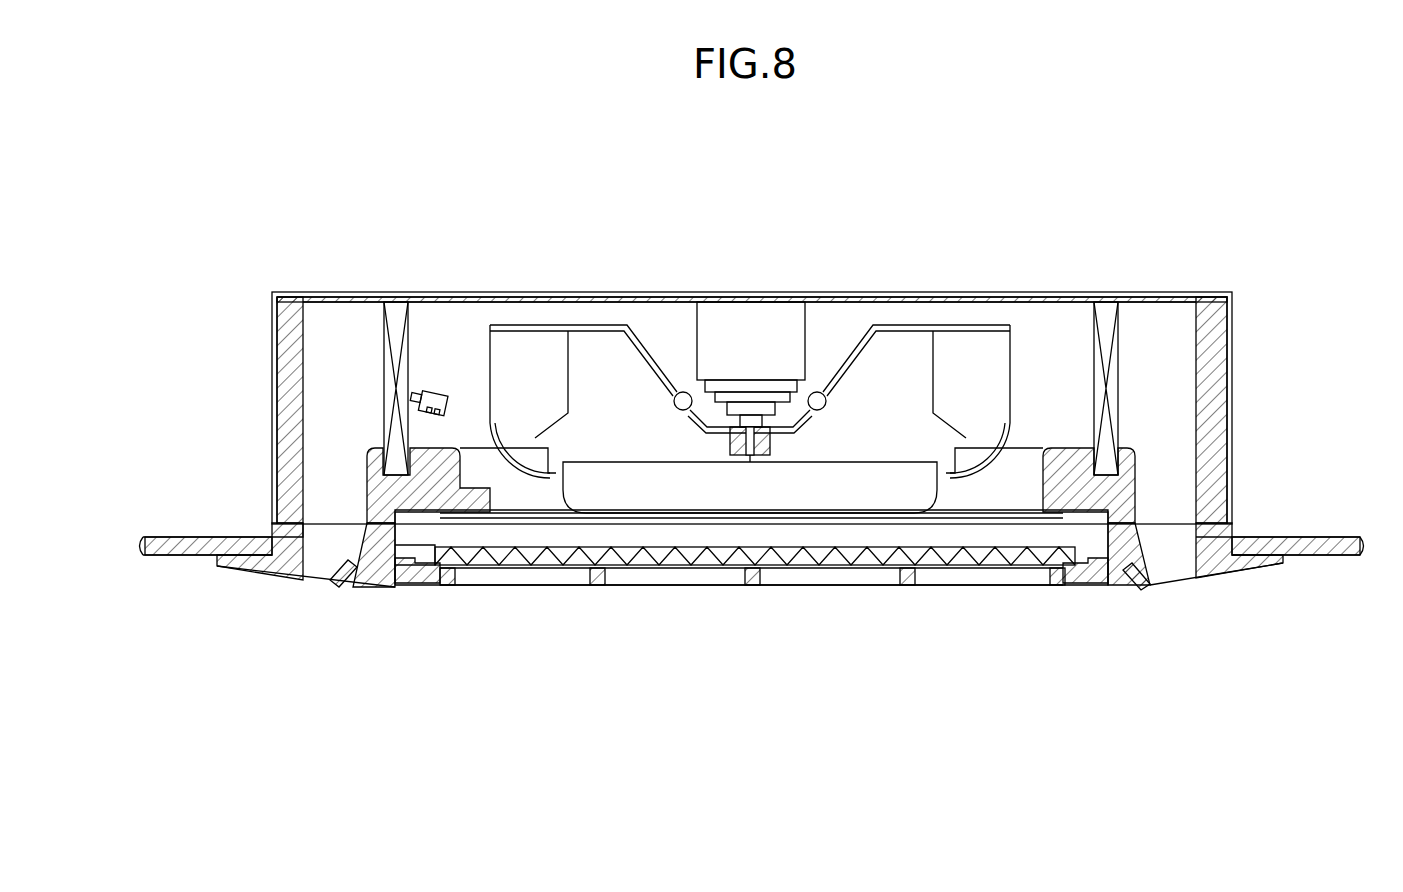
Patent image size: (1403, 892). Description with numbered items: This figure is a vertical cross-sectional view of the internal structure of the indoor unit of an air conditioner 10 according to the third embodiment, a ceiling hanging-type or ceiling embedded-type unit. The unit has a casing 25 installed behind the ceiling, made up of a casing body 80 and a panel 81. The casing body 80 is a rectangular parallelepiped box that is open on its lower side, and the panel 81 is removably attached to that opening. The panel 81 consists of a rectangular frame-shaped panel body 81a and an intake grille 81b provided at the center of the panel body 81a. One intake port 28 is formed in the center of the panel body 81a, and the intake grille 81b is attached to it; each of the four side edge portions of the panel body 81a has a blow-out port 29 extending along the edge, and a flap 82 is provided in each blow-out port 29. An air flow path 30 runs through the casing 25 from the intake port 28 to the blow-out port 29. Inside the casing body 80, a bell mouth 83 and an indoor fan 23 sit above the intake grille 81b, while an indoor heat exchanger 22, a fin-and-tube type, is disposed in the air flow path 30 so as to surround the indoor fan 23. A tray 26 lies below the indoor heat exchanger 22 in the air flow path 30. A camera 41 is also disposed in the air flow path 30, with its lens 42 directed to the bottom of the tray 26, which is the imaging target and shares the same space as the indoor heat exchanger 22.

The air conditioner 10 is at (1200, 290).
The indoor heat exchanger 22 is at (383, 333).
The indoor fan 23 is at (845, 327).
The casing 25 is at (403, 296).
The tray 26 is at (368, 462).
The intake port 28 is at (543, 541).
The blow-out port 29 is at (294, 572).
The air flow path 30 is at (430, 333).
The camera 41 is at (436, 393).
The lens 42 is at (428, 416).
The casing body 80 is at (272, 432).
The panel 81 is at (387, 588).
The panel body 81a is at (1110, 584).
The intake grille 81b is at (436, 584).
The flap 82 is at (348, 580).
The bell mouth 83 is at (612, 461).